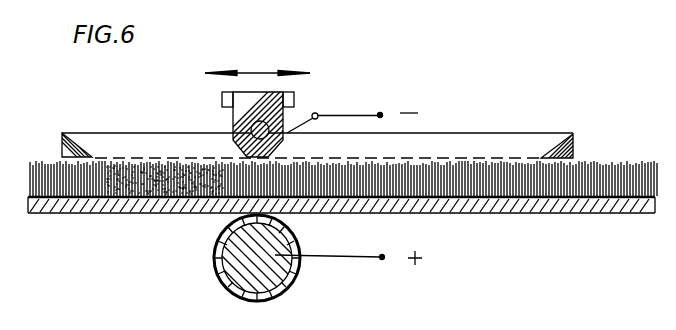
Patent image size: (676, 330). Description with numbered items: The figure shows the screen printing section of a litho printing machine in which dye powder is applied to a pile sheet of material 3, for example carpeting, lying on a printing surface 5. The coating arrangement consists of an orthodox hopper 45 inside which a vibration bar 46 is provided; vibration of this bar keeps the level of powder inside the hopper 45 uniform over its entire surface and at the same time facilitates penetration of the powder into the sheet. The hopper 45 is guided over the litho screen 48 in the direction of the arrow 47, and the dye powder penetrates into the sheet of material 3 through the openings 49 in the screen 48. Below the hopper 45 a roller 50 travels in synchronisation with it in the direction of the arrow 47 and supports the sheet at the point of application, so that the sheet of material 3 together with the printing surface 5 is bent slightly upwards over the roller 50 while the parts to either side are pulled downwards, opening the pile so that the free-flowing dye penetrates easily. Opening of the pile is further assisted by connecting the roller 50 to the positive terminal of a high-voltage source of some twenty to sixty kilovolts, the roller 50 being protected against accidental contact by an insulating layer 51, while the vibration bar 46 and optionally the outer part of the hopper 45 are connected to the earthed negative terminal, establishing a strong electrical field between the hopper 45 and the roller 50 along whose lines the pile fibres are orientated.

The sheet of material 3 is at (42, 176).
The printing surface 5 is at (103, 213).
The hopper 45 is at (286, 111).
The vibration bar 46 is at (240, 132).
The arrow 47 is at (262, 72).
The litho screen 48 is at (578, 142).
The openings 49 is at (131, 176).
The roller 50 is at (224, 262).
The insulating layer 51 is at (282, 290).